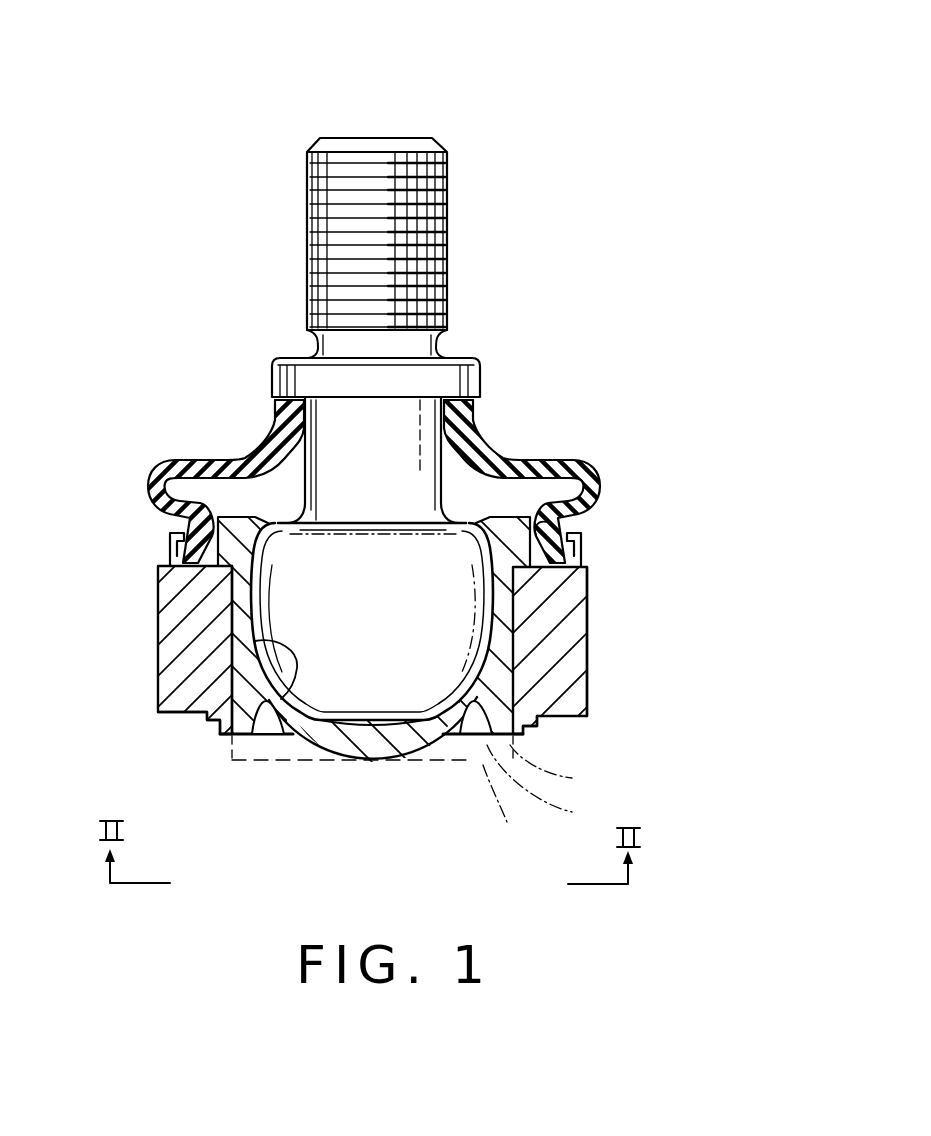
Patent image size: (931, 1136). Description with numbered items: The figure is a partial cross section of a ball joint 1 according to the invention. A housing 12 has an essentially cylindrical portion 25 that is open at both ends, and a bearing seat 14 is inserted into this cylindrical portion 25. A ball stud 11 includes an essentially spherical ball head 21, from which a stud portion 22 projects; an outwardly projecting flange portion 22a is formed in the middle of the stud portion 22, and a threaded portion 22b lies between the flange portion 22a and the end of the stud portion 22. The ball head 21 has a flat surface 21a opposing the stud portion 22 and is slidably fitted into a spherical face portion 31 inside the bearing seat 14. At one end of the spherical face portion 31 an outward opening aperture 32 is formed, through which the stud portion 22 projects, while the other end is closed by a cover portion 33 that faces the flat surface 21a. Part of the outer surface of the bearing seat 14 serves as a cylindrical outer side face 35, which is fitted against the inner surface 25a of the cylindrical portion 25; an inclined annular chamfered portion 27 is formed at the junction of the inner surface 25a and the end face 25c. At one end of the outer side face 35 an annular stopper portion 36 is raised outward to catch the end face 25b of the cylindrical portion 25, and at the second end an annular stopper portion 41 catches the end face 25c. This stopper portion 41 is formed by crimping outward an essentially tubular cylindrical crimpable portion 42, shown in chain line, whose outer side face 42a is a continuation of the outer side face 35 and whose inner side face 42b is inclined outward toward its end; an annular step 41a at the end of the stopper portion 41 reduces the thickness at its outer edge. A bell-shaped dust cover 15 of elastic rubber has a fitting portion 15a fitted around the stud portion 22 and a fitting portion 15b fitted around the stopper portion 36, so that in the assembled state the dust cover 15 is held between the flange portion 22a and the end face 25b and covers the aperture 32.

The ball joint 1 is at (472, 105).
The ball stud 11 is at (447, 223).
The housing 12 is at (590, 598).
The bearing seat 14 is at (371, 752).
The dust cover 15 is at (550, 463).
The fitting portion 15a is at (478, 412).
The fitting portion 15b is at (583, 551).
The ball head 21 is at (387, 680).
The flat surface 21a is at (337, 752).
The stud portion 22 is at (447, 177).
The flange portion 22a is at (482, 377).
The threaded portion 22b is at (447, 284).
The cylindrical portion 25 is at (552, 655).
The inner surface 25a is at (232, 630).
The end face 25b is at (168, 562).
The end face 25c is at (170, 713).
The annular chamfered portion 27 is at (222, 735).
The spherical face portion 31 is at (271, 737).
The aperture 32 is at (263, 535).
The cover portion 33 is at (470, 708).
The outer side face 35 is at (256, 662).
The annular stopper portion 36 is at (583, 535).
The annular stopper portion 41 is at (530, 735).
The annular step 41a is at (537, 731).
The cylindrical crimpable portion 42 is at (550, 789).
The outer side face 42a is at (570, 772).
The inner side face 42b is at (521, 809).